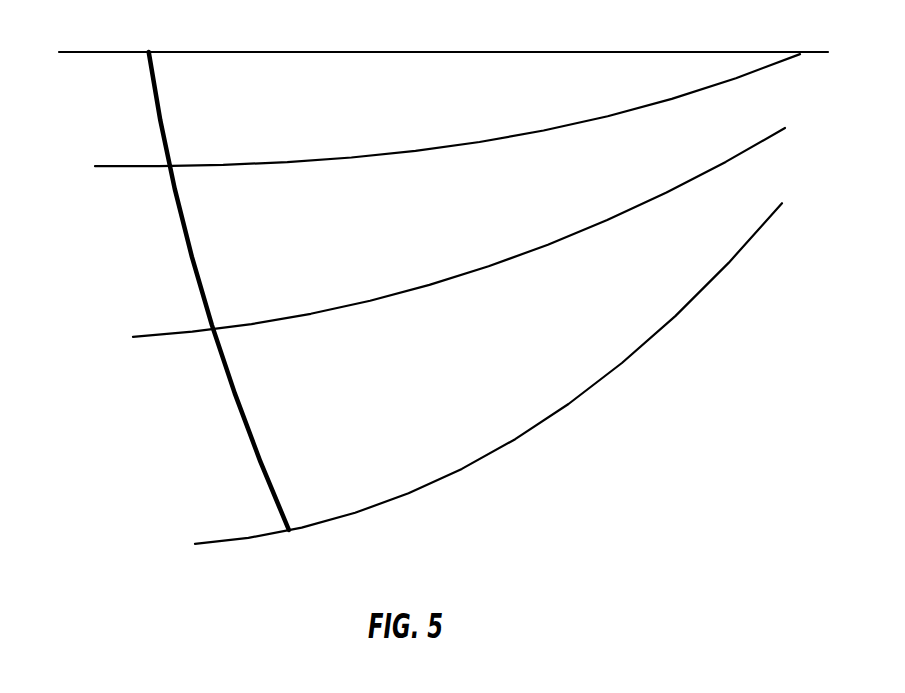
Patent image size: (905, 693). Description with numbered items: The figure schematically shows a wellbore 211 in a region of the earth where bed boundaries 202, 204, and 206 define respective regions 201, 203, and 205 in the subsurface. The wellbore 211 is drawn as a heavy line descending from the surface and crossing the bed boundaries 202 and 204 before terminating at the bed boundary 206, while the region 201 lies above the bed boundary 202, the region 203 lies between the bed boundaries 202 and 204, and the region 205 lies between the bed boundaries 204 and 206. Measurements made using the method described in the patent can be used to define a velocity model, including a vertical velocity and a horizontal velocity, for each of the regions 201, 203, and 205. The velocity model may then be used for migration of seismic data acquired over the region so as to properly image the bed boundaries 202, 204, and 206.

The region 201 is at (373, 128).
The bed boundary 202 is at (545, 129).
The region 203 is at (363, 262).
The bed boundary 204 is at (602, 229).
The region 205 is at (413, 420).
The bed boundary 206 is at (604, 377).
The wellbore 211 is at (197, 283).